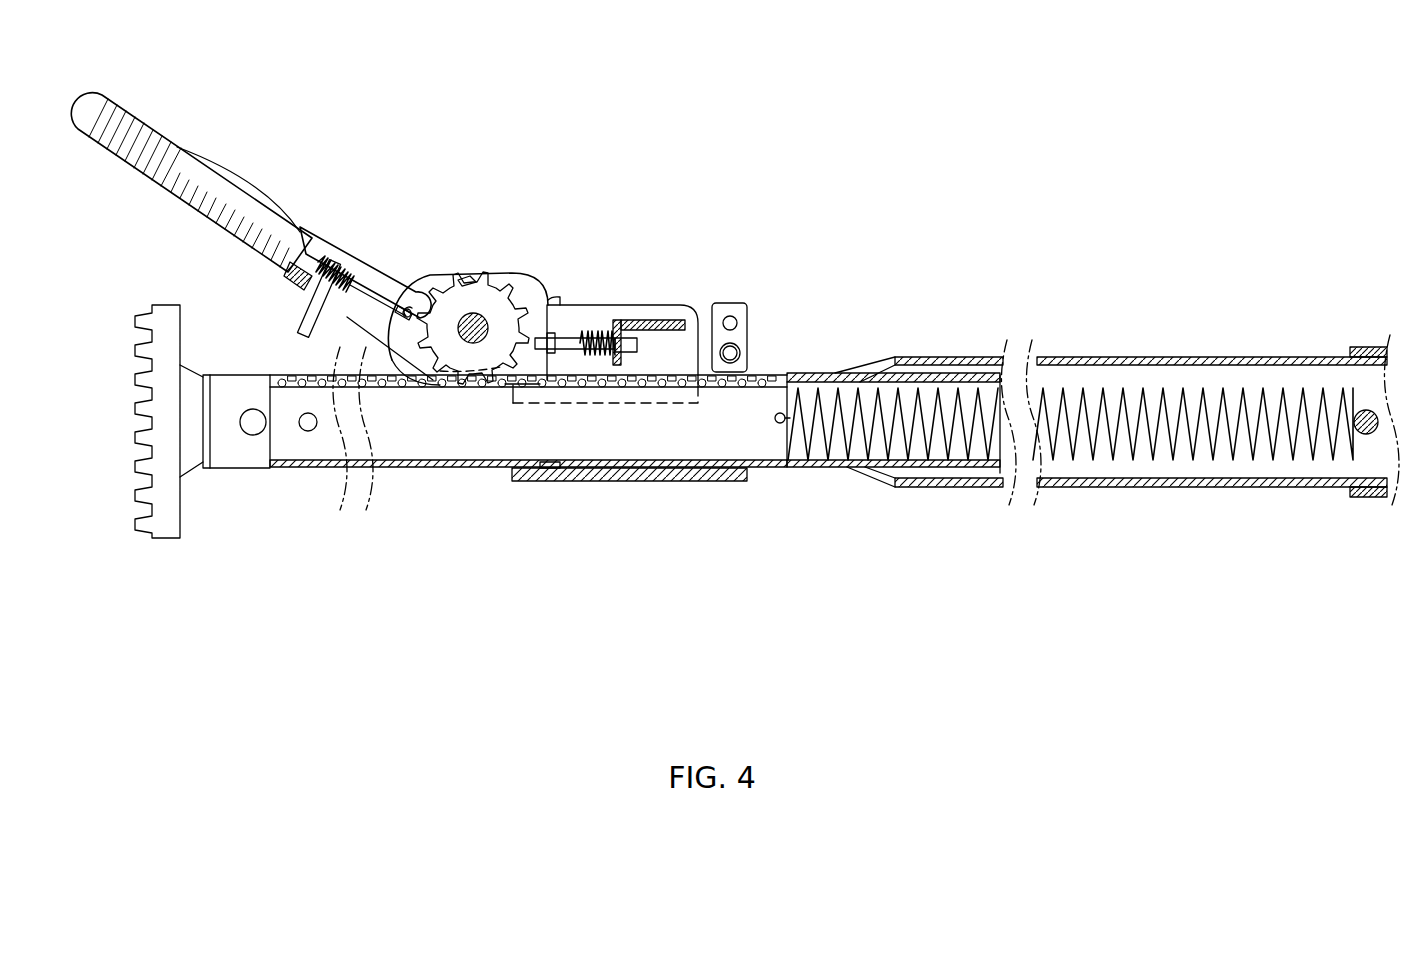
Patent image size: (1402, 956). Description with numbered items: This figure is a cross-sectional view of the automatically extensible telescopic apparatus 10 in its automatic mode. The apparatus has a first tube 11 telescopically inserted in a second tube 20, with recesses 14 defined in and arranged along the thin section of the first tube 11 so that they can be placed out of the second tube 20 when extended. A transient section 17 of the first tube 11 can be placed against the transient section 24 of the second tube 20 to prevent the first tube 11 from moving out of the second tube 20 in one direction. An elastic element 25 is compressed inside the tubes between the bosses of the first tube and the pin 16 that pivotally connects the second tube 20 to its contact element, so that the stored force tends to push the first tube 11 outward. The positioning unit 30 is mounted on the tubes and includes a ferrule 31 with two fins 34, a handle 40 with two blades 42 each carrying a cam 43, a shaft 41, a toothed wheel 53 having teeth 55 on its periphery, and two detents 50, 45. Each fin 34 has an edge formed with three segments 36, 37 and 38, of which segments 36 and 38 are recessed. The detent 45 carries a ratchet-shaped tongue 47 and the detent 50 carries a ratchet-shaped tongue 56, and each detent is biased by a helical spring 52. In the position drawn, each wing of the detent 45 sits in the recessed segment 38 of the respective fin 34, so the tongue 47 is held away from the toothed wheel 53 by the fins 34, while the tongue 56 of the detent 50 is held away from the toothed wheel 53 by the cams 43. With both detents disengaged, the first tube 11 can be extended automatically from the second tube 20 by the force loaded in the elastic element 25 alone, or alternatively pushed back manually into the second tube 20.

The automatically extensible telescopic apparatus 10 is at (997, 284).
The first tube 11 is at (445, 463).
The recesses 14 is at (300, 380).
The pin 16 is at (1366, 410).
The transient section 17 is at (858, 373).
The second tube 20 is at (1120, 487).
The transient section 24 is at (883, 365).
The elastic element 25 is at (1237, 393).
The positioning unit 30 is at (620, 228).
The ferrule 31 is at (665, 481).
The fins 34 is at (683, 345).
The segment 36 is at (560, 297).
The segment 37 is at (517, 275).
The segment 38 is at (393, 315).
The handle 40 is at (152, 157).
The shaft 41 is at (470, 325).
The blades 42 is at (370, 277).
The cam 43 is at (543, 350).
The detent 45 is at (308, 333).
The tongue 47 is at (408, 313).
The detent 50 is at (576, 357).
The helical spring 52 is at (328, 260).
The toothed wheel 53 is at (423, 387).
The teeth 55 is at (467, 278).
The tongue 56 is at (523, 387).